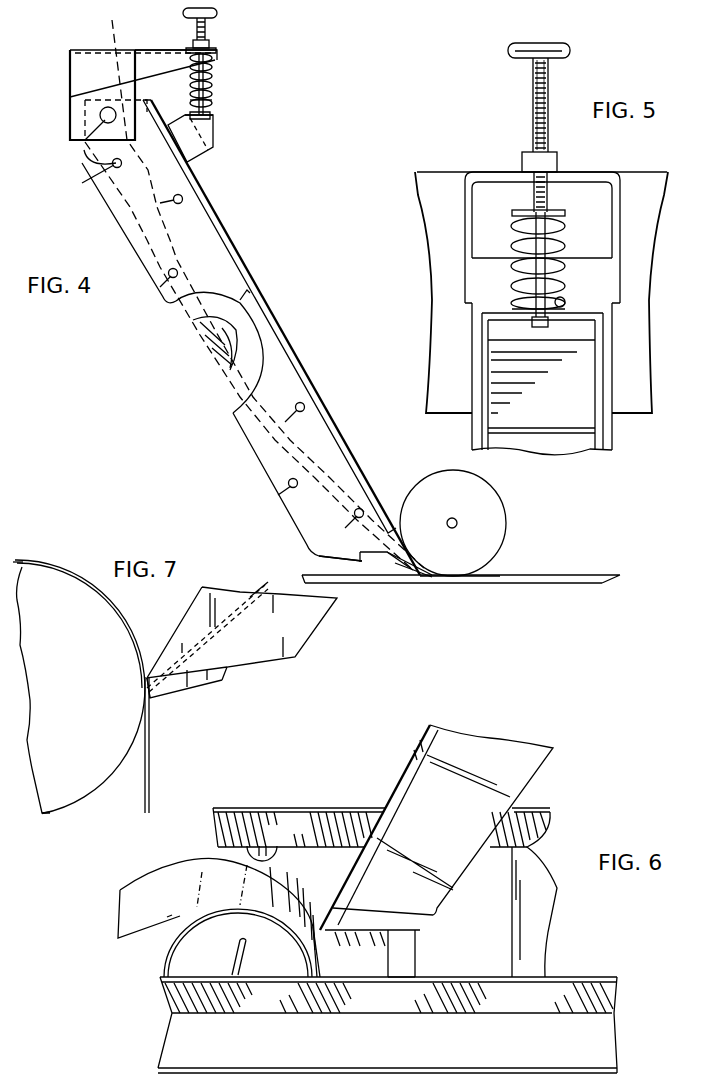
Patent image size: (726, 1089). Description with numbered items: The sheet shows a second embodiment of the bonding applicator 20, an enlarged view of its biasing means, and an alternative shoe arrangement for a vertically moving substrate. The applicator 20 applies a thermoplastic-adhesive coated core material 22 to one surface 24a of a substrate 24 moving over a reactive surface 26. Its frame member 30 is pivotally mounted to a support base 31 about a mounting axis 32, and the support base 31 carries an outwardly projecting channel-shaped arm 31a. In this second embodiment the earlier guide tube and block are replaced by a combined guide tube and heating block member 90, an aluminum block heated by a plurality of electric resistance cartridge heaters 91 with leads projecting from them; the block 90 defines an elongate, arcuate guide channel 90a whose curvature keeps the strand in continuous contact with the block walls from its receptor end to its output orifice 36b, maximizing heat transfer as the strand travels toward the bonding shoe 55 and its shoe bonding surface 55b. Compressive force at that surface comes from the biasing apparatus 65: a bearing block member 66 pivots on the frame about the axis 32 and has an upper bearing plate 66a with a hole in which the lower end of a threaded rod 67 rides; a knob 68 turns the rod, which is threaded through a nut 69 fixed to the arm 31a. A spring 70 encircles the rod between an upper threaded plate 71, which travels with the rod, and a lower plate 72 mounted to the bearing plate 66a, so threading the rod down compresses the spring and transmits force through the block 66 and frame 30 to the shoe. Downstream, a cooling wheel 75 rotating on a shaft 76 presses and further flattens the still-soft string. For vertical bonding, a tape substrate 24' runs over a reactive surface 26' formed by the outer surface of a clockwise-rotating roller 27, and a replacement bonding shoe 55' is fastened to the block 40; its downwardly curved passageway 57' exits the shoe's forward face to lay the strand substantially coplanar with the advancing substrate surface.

In FIG. 4, the bonding applicator 20 is at (268, 284).
In FIG. 6, the bonding applicator 20 is at (389, 782).
In FIG. 4, the thermoplastic-adhesive coated core material 22 is at (254, 290).
In FIG. 7, the thermoplastic-adhesive coated core material 22 is at (149, 813).
In FIG. 7, the substrate 24 is at (79, 675).
In FIG. 4, the substrate 24' is at (461, 591).
In FIG. 6, the substrate 24' is at (217, 914).
In FIG. 4, the substrate surface 24a is at (320, 575).
In FIG. 7, the substrate surface 24a is at (130, 628).
In FIG. 6, the substrate surface 24a is at (160, 910).
In FIG. 4, the reactive surface 26 is at (460, 593).
In FIG. 7, the reactive surface 26' is at (81, 794).
In FIG. 6, the reactive surface 26' is at (358, 1018).
In FIG. 7, the roller 27 is at (75, 640).
In FIG. 6, the roller 27 is at (217, 945).
In FIG. 4, the frame member 30 is at (305, 373).
In FIG. 6, the frame member 30 is at (551, 749).
In FIG. 4, the support base 31 is at (82, 50).
In FIG. 4, the projecting arm 31a is at (157, 50).
In FIG. 5, the projecting arm 31a is at (599, 172).
In FIG. 4, the mounting axis 32 is at (130, 113).
In FIG. 4, the output orifice 36b is at (420, 578).
In FIG. 6, the block of heat-conducting material 40 is at (330, 903).
In FIG. 4, the bonding shoe 55 is at (386, 578).
In FIG. 7, the bonding shoe 55' is at (242, 648).
In FIG. 6, the bonding shoe 55' is at (381, 953).
In FIG. 6, the shoe bonding surface 55b is at (296, 952).
In FIG. 7, the passageway 57' is at (124, 692).
In FIG. 4, the biasing apparatus 65 is at (222, 99).
In FIG. 5, the biasing apparatus 65 is at (500, 153).
In FIG. 4, the bearing block member 66 is at (214, 148).
In FIG. 5, the bearing block member 66 is at (604, 363).
In FIG. 4, the bearing plate 66a is at (214, 116).
In FIG. 5, the bearing plate 66a is at (496, 316).
In FIG. 4, the threaded rod 67 is at (209, 43).
In FIG. 5, the threaded rod 67 is at (549, 92).
In FIG. 4, the knob 68 is at (217, 13).
In FIG. 5, the knob 68 is at (571, 51).
In FIG. 5, the nut 69 is at (557, 163).
In FIG. 4, the spring 70 is at (213, 52).
In FIG. 5, the spring 70 is at (562, 252).
In FIG. 5, the threaded plate 71 is at (566, 214).
In FIG. 5, the lower plate 72 is at (566, 309).
In FIG. 4, the cooling wheel 75 is at (493, 500).
In FIG. 4, the shaft 76 is at (461, 518).
In FIG. 4, the combined guide tube and heating block member 90 is at (222, 328).
In FIG. 4, the guide channel 90a is at (233, 361).
In FIG. 4, the electric resistance cartridge heaters 91 is at (119, 167).